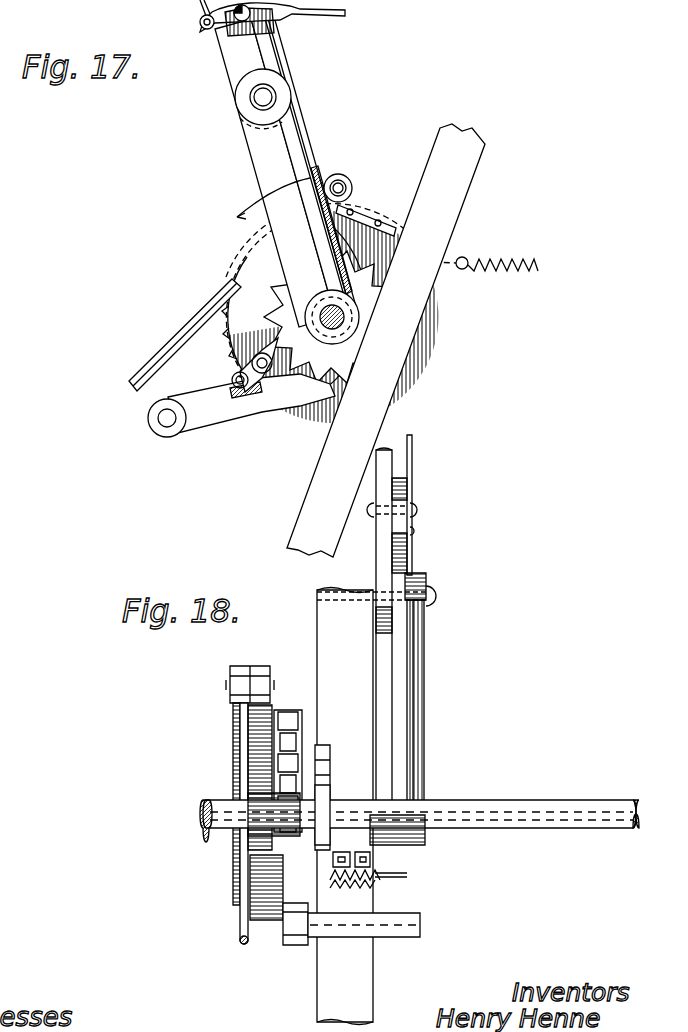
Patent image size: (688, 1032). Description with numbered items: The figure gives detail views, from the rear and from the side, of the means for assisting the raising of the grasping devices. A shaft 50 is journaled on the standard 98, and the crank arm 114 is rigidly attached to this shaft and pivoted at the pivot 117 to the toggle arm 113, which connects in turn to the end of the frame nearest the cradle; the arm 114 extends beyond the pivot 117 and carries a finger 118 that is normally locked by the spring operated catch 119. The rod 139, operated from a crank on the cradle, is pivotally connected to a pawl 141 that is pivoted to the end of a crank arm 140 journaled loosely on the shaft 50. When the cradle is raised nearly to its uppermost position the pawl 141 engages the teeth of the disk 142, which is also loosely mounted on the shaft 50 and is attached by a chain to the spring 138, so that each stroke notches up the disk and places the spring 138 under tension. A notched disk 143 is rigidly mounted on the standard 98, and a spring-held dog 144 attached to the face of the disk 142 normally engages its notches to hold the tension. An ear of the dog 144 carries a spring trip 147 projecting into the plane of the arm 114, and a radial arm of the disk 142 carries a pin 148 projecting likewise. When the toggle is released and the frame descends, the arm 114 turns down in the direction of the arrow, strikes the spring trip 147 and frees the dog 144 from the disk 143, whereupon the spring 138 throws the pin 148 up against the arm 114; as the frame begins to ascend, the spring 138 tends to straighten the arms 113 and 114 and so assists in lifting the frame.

In FIG. 17, the shaft 50 is at (345, 332).
In FIG. 18, the shaft 50 is at (470, 803).
In FIG. 17, the standard 98 is at (468, 170).
In FIG. 18, the standard 98 is at (345, 806).
In FIG. 17, the toggle arm 113 is at (282, 25).
In FIG. 18, the toggle arm 113 is at (377, 555).
In FIG. 17, the crank arm 114 is at (316, 140).
In FIG. 18, the crank arm 114 is at (424, 648).
In FIG. 17, the pivot 117 is at (276, 95).
In FIG. 17, the finger 118 is at (228, 45).
In FIG. 18, the finger 118 is at (405, 553).
In FIG. 17, the spring operated catch 119 is at (300, 8).
In FIG. 18, the spring operated catch 119 is at (400, 498).
In FIG. 17, the spring 138 is at (522, 286).
In FIG. 17, the rod 139 is at (156, 368).
In FIG. 18, the rod 139 is at (240, 870).
In FIG. 17, the crank arm 140 is at (356, 216).
In FIG. 18, the crank arm 140 is at (233, 757).
In FIG. 17, the pawl 141 is at (330, 170).
In FIG. 18, the pawl 141 is at (268, 655).
In FIG. 17, the disk 142 is at (246, 272).
In FIG. 18, the disk 142 is at (300, 783).
In FIG. 17, the notched disk 143 is at (322, 395).
In FIG. 18, the notched disk 143 is at (322, 745).
In FIG. 17, the dog 144 is at (275, 385).
In FIG. 18, the dog 144 is at (300, 910).
In FIG. 17, the spring trip 147 is at (234, 378).
In FIG. 18, the spring trip 147 is at (400, 872).
In FIG. 17, the pin 148 is at (166, 424).
In FIG. 18, the pin 148 is at (415, 912).